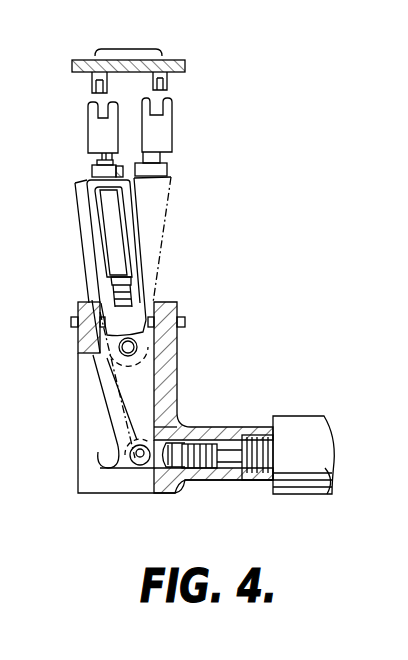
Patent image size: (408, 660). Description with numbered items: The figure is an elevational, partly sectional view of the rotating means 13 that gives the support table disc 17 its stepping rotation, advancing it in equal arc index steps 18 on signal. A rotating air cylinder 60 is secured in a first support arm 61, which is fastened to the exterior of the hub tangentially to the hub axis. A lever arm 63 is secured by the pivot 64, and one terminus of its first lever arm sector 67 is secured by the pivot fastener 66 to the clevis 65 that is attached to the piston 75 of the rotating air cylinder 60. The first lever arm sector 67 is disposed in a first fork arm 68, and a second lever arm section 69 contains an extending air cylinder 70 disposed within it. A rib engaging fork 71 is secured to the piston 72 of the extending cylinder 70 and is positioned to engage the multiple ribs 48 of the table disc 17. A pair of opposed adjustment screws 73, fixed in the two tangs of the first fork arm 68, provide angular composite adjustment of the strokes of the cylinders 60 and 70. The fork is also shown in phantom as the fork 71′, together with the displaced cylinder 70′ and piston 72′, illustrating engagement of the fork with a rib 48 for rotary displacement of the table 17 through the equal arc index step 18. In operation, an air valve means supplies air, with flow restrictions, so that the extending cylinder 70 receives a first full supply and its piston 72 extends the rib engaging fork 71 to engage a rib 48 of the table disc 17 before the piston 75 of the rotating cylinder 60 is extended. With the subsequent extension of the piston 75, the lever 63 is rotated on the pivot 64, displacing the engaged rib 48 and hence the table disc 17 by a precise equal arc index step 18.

The rotating means 13 is at (195, 260).
The table disc 17 is at (172, 62).
The equal arc index step 18 is at (130, 48).
The ribs 48 is at (91, 78).
The rotating air cylinder 60 is at (302, 425).
The first support arm 61 is at (264, 472).
The lever arm 63 is at (137, 398).
The pivot 64 is at (137, 345).
The clevis 65 is at (157, 470).
The pivot fastener 66 is at (135, 462).
The first lever arm sector 67 is at (103, 404).
The first fork arm 68 is at (83, 393).
The second lever arm section 69 is at (80, 262).
The extending air cylinder 70 is at (117, 233).
The extending air cylinder (phantom position) 70′ is at (155, 198).
The rib engaging fork 71 is at (95, 126).
The rib engaging fork (phantom position) 71′ is at (170, 133).
The piston 72 is at (100, 160).
The piston (phantom position) 72′ is at (160, 167).
The adjustment screws 73 is at (75, 325).
The piston 75 is at (233, 462).